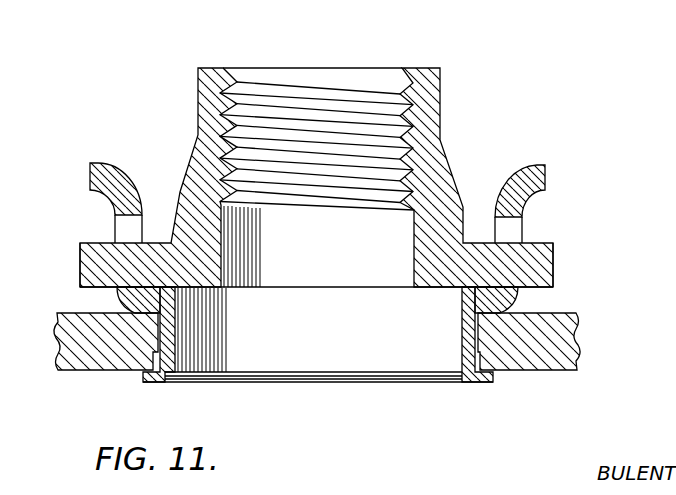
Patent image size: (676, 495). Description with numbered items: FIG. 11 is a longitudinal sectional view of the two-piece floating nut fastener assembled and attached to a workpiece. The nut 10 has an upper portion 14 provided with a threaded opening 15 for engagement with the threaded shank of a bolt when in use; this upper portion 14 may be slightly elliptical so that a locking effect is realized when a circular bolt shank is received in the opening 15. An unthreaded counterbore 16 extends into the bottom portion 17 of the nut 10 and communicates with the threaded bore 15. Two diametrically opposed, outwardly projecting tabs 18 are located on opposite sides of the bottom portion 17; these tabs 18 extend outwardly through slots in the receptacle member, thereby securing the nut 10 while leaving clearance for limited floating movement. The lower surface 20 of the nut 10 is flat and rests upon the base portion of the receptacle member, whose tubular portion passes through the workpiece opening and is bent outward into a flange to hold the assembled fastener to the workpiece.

The nut 10 is at (263, 55).
The upper portion 14 is at (440, 102).
The threaded opening 15 is at (350, 77).
The unthreaded counterbore 16 is at (290, 281).
The bottom portion 17 is at (464, 212).
The tabs 18 is at (80, 267).
The lower surface 20 is at (433, 288).